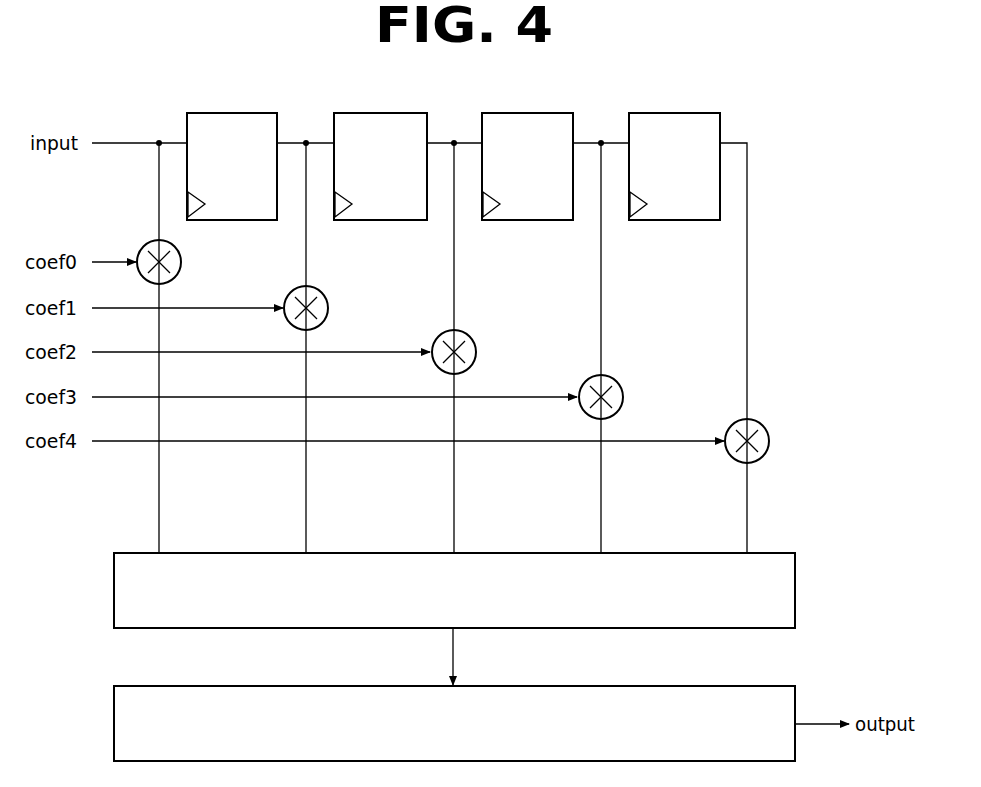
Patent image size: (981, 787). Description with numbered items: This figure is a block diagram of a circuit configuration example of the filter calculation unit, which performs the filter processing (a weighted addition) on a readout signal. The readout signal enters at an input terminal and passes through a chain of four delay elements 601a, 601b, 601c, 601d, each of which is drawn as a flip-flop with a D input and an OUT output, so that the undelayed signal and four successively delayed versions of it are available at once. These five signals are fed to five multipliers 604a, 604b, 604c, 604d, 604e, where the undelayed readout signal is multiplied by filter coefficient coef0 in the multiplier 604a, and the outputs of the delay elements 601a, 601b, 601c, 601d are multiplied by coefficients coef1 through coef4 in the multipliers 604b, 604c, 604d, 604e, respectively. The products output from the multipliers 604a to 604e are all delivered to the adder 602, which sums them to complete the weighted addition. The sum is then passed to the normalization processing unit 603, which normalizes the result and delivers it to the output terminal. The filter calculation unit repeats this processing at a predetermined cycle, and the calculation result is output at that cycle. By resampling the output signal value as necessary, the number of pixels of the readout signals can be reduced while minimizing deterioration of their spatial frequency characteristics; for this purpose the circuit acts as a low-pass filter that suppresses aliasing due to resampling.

The delay element 601a is at (257, 112).
The delay element 601b is at (397, 112).
The delay element 601c is at (545, 112).
The delay element 601d is at (693, 112).
The multiplier 604a is at (180, 258).
The multiplier 604b is at (327, 302).
The multiplier 604c is at (475, 346).
The multiplier 604d is at (622, 391).
The multiplier 604e is at (768, 435).
The adder 602 is at (795, 578).
The normalization processing unit 603 is at (795, 700).